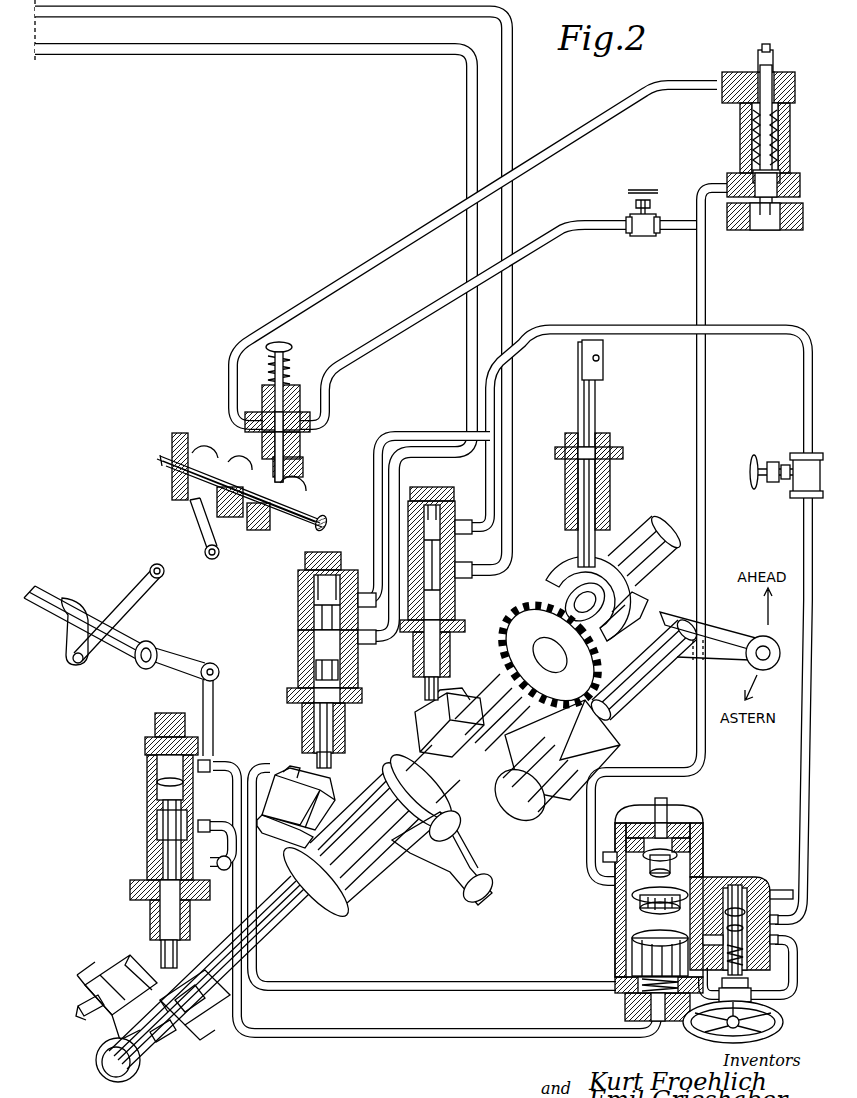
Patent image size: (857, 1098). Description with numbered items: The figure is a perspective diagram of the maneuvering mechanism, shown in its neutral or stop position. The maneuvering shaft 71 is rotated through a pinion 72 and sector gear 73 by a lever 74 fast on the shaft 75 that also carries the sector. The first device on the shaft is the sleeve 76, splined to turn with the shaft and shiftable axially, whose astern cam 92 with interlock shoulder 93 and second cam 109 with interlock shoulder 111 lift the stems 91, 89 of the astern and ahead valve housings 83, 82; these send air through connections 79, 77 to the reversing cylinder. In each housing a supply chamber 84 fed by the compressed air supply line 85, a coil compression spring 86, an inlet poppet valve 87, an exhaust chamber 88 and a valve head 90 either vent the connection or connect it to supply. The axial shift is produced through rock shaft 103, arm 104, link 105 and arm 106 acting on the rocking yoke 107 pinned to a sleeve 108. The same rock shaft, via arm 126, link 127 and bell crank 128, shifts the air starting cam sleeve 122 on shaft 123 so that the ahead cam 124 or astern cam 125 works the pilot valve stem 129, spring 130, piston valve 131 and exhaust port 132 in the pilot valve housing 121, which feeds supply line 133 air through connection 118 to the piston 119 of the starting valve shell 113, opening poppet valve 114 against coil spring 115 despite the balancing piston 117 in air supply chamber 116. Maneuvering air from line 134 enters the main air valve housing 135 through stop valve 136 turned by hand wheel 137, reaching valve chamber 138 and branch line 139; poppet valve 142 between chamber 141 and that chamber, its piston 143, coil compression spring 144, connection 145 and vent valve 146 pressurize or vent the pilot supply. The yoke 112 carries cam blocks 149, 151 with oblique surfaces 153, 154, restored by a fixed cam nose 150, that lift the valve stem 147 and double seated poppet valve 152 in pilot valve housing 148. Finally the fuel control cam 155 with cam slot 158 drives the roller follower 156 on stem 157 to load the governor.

The maneuvering shaft 71 is at (666, 549).
The pinion 72 is at (507, 649).
The sector gear 73 is at (552, 765).
The lever 74 is at (728, 631).
The shaft 75 is at (640, 692).
The sleeve 76 is at (352, 882).
The connection 77 is at (298, 50).
The connection 79 is at (245, 14).
The ahead valve housing 82 is at (298, 637).
The astern valve housing 83 is at (455, 615).
The supply chamber 84 is at (300, 590).
The compressed air supply line 85 is at (581, 325).
The coil compression spring 86 is at (326, 571).
The inlet poppet valve 87 is at (300, 608).
The exhaust chamber 88 is at (300, 665).
The stem 89 is at (336, 756).
The valve head 90 is at (338, 672).
The stem 91 is at (425, 690).
The astern cam 92 is at (418, 720).
The interlock shoulder 93 is at (464, 692).
The rock shaft 103 is at (52, 594).
The arm 104 is at (177, 653).
The link 105 is at (214, 713).
The arm 106 is at (262, 832).
The rocking yoke 107 is at (465, 845).
The sleeve 108 is at (432, 793).
The second cam 109 is at (298, 799).
The interlock shoulder 111 is at (294, 768).
The yoke 112 is at (158, 1058).
The shell 113 is at (742, 157).
The poppet valve 114 is at (769, 229).
The coil spring 115 is at (789, 137).
The air supply chamber 116 is at (786, 195).
The piston 117 is at (782, 172).
The connection 118 is at (605, 113).
The piston 119 is at (746, 108).
The pilot valve housing 121 is at (300, 403).
The air starting cam sleeve 122 is at (298, 497).
The shaft 123 is at (165, 466).
The ahead cam 124 is at (285, 531).
The astern cam 125 is at (261, 521).
The arm 126 is at (68, 640).
The link 127 is at (144, 610).
The bell crank 128 is at (188, 562).
The pilot valve stem 129 is at (275, 362).
The coil compression spring 130 is at (291, 357).
The piston valve 131 is at (306, 440).
The exhaust port 132 is at (305, 462).
The supply line 133 is at (393, 337).
The line 134 is at (783, 890).
The main air valve housing 135 is at (710, 877).
The stop valve 136 is at (741, 885).
The hand wheel 137 is at (776, 1015).
The valve chamber 138 is at (628, 925).
The branch line 139 is at (569, 987).
The chamber 141 is at (590, 873).
The poppet valve 142 is at (628, 903).
The piston 143 is at (636, 953).
The coil compression spring 144 is at (640, 1012).
The connection 145 is at (426, 1036).
The vent valve 146 is at (684, 822).
The valve stem 147 is at (181, 956).
The pilot valve housing 148 is at (147, 785).
The cam block 149 is at (216, 1040).
The fixed cam nose 150 is at (78, 1010).
The cam block 151 is at (90, 976).
The double seated poppet valve 152 is at (157, 823).
The oblique surface 153 is at (232, 1010).
The oblique surface 154 is at (108, 959).
The fuel control cam 155 is at (558, 561).
The roller follower 156 is at (612, 546).
The stem 157 is at (597, 409).
The cam slot 158 is at (638, 600).